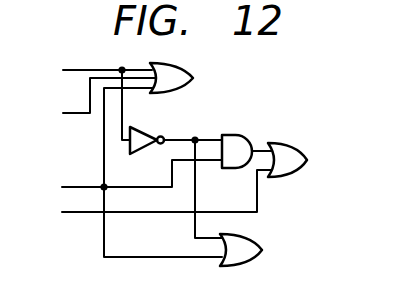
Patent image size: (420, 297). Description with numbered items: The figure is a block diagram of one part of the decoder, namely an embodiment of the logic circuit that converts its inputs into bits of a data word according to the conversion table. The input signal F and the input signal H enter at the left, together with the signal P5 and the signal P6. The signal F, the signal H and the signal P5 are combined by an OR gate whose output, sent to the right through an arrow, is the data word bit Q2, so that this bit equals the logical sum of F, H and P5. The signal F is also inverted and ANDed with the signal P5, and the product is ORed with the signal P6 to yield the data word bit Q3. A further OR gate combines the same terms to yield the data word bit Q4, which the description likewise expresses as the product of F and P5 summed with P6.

The input signal F is at (96, 93).
The input signal H is at (97, 105).
The signal p5 P5 is at (128, 182).
The signal p6 P6 is at (152, 207).
The data word bit Q2' Q2 is at (272, 46).
The data word bit Q3' Q3 is at (307, 160).
The data word bit Q4' Q4 is at (262, 250).